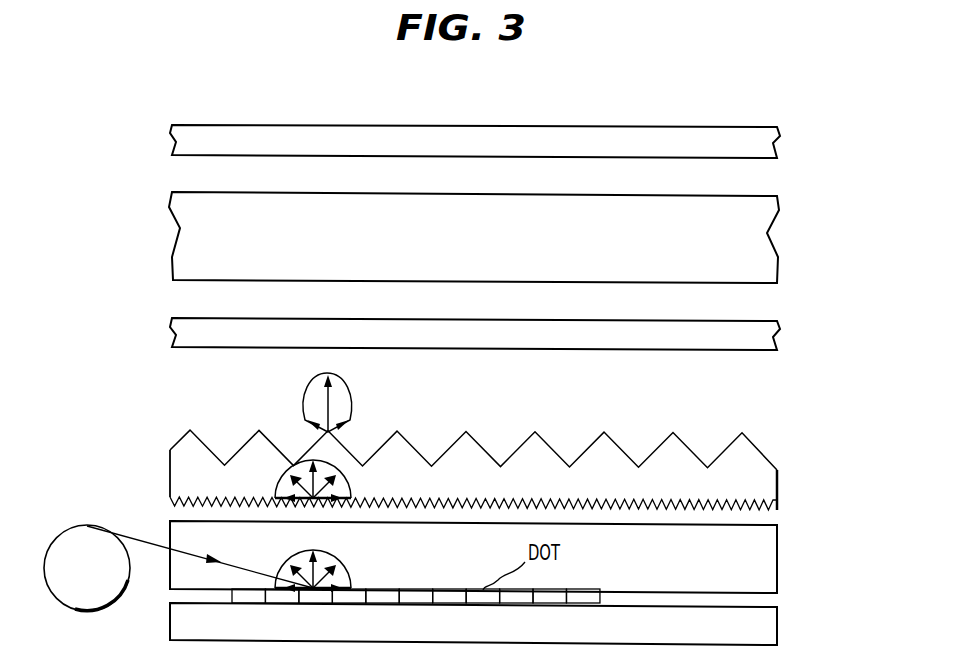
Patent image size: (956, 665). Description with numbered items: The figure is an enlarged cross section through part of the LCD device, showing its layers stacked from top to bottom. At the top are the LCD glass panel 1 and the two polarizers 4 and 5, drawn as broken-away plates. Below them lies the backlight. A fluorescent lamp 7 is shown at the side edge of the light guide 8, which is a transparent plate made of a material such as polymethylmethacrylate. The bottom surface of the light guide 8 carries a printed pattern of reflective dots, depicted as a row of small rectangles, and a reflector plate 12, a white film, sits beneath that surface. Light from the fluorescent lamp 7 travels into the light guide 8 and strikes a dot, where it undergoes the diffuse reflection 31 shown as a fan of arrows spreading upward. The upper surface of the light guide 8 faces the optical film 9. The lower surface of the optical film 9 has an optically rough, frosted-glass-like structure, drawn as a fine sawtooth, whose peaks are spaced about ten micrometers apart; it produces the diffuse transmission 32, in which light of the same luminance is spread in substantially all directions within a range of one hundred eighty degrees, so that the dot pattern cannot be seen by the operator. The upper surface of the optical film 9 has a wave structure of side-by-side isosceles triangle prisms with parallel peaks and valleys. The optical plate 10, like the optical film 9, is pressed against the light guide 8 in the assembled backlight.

The LCD glass panel 1 is at (760, 245).
The polarizer 4 is at (760, 146).
The polarizer 5 is at (760, 340).
The fluorescent lamp 7 is at (62, 530).
The light guide 8 is at (760, 563).
The optical film 9 is at (747, 453).
The optical plate 10 is at (770, 505).
The reflector plate 12 is at (760, 626).
The diffuse reflection 31 is at (350, 578).
The diffuse transmission 32 is at (278, 480).